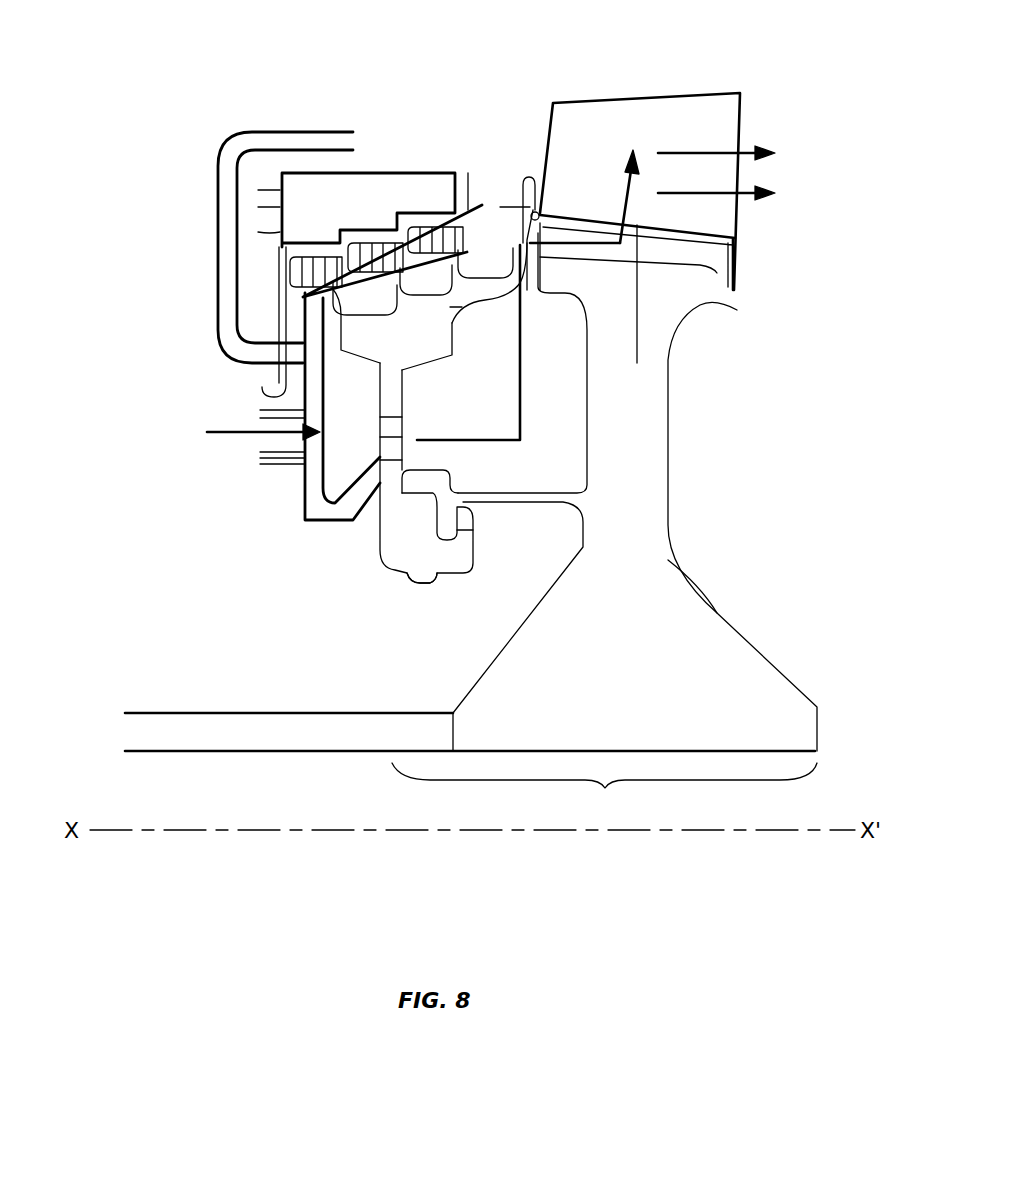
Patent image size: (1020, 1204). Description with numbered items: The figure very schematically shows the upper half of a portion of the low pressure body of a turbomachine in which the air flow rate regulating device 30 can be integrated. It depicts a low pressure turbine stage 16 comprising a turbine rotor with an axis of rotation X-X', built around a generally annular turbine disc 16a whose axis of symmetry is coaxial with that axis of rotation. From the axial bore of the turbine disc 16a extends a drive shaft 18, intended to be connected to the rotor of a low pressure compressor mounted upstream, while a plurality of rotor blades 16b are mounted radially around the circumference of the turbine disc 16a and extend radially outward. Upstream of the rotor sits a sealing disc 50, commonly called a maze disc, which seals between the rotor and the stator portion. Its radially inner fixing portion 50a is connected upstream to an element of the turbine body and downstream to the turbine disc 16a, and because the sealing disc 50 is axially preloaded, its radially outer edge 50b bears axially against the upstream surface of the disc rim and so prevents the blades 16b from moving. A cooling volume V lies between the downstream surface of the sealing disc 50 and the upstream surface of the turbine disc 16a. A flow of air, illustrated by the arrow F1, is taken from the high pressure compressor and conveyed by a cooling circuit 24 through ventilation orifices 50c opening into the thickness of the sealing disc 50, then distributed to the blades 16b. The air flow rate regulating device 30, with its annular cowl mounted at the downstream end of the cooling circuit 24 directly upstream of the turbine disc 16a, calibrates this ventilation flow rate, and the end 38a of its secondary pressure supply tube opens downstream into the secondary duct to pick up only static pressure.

The low pressure turbine stage 16 is at (604, 516).
The turbine disc 16a is at (673, 623).
The rotor blades 16b is at (718, 178).
The drive shaft 18 is at (325, 737).
The cooling circuit 24 is at (278, 465).
The air flow rate regulating device 30 is at (327, 532).
The end of secondary pressure supply tube 38a is at (318, 142).
The sealing disc 50 is at (371, 558).
The radially inner fixing portion 50a is at (447, 567).
The radially outer edge 50b is at (517, 237).
The ventilation orifices 50c is at (405, 445).
The flow of air F1 is at (220, 436).
The cooling volume V is at (468, 342).